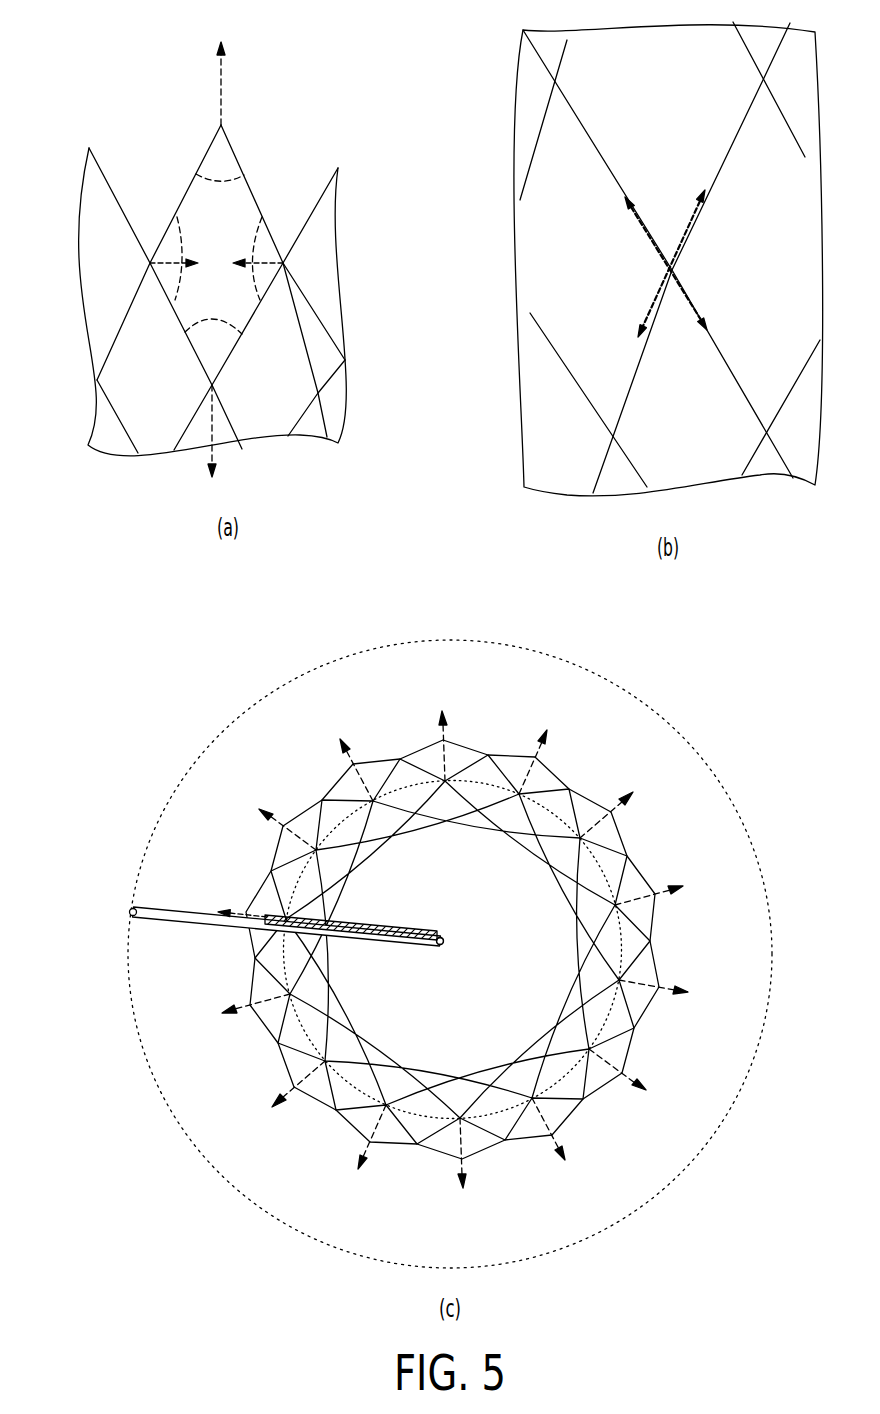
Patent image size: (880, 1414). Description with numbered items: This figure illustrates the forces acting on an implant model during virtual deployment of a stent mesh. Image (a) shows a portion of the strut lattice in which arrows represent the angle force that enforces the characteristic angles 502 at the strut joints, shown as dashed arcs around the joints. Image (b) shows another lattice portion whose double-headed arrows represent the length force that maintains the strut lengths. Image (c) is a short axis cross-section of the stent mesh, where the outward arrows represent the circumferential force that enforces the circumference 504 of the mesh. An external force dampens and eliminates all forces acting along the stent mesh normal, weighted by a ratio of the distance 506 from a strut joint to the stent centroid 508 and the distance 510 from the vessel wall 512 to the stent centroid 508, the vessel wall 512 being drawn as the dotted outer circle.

The characteristic angles 502 is at (245, 170).
The circumference 504 is at (575, 880).
The distance from the strut joint to the stent centroid 506 is at (390, 920).
The stent centroid 508 is at (445, 946).
The distance from the vessel wall to the stent centroid 510 is at (178, 907).
The vessel wall 512 is at (243, 718).